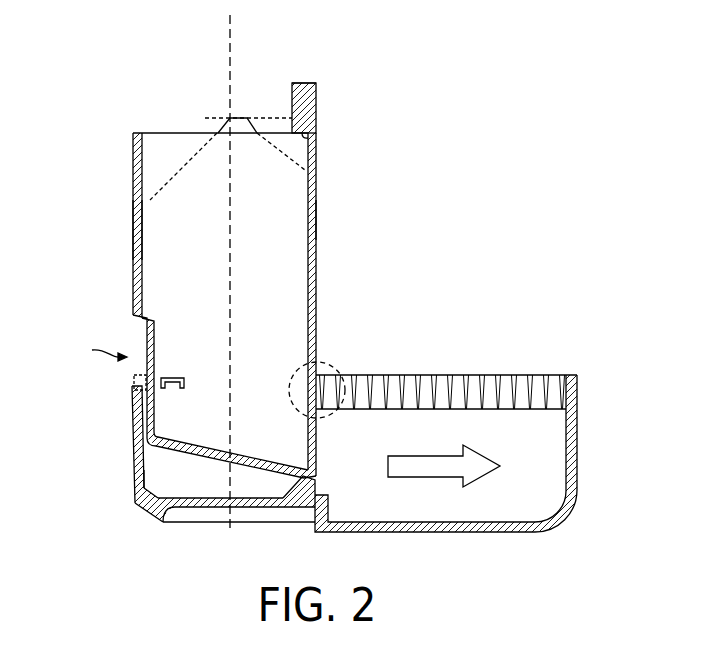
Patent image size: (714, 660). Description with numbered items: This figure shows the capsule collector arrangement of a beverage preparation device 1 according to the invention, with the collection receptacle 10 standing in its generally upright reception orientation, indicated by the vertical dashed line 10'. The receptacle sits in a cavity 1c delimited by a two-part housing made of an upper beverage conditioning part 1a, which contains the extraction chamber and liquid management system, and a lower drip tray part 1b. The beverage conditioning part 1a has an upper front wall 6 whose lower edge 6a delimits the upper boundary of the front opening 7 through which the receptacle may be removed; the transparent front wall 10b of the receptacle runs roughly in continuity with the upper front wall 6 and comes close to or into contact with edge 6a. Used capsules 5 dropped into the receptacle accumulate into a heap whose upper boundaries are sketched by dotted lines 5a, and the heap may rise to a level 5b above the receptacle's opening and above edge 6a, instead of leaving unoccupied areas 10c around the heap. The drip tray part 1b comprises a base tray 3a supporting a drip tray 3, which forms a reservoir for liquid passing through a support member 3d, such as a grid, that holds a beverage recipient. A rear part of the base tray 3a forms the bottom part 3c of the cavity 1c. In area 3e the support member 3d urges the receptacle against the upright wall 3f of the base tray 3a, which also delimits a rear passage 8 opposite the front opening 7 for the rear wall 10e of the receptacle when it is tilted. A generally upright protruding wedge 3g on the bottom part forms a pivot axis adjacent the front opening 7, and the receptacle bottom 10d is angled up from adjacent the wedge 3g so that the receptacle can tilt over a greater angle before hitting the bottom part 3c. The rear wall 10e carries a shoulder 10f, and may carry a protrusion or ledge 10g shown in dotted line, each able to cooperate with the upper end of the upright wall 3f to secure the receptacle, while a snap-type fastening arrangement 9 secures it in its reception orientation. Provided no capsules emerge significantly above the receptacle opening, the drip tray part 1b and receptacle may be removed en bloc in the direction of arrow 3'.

The beverage preparation device 1 is at (139, 57).
The beverage conditioning part 1a is at (279, 74).
The drip tray part 1b is at (532, 548).
The cavity 1c is at (158, 468).
The drip tray 3 is at (328, 451).
The arrow 3' is at (444, 502).
The base tray 3a is at (213, 508).
The bottom part 3c is at (164, 520).
The support member 3d is at (516, 375).
The area 3e is at (340, 363).
The upright wall 3f is at (133, 440).
The protruding wedge 3g is at (302, 495).
The capsules 5 is at (222, 130).
The dotted lines 5a is at (155, 192).
The level 5b is at (258, 118).
The upper front wall 6 is at (317, 97).
The lower edge 6a is at (310, 135).
The opening 7 is at (327, 221).
The rear passage 8 is at (99, 350).
The fastening arrangement 9 is at (173, 378).
The collection receptacle 10 is at (227, 287).
The reception orientation 10' is at (198, 273).
The transparent front wall 10b is at (317, 262).
The unoccupied areas 10c is at (143, 150).
The bottom 10d is at (248, 470).
The rear wall 10e is at (137, 226).
The shoulder 10f is at (141, 320).
The protrusion or ledge 10g is at (138, 385).